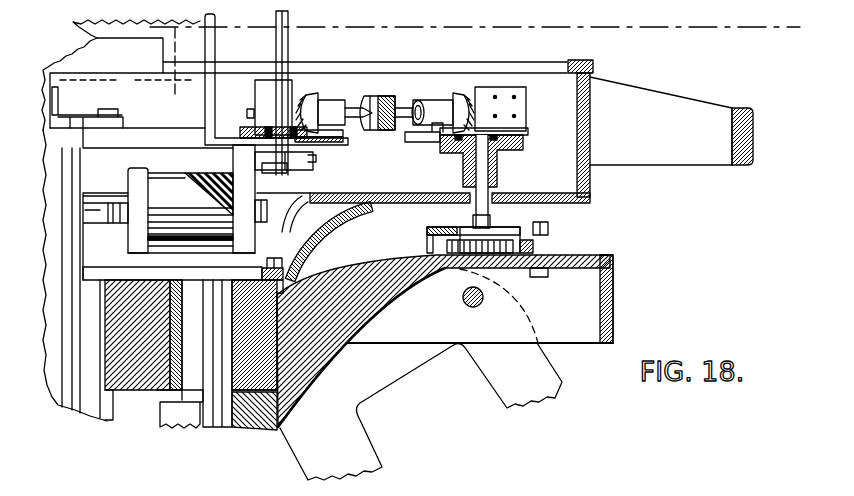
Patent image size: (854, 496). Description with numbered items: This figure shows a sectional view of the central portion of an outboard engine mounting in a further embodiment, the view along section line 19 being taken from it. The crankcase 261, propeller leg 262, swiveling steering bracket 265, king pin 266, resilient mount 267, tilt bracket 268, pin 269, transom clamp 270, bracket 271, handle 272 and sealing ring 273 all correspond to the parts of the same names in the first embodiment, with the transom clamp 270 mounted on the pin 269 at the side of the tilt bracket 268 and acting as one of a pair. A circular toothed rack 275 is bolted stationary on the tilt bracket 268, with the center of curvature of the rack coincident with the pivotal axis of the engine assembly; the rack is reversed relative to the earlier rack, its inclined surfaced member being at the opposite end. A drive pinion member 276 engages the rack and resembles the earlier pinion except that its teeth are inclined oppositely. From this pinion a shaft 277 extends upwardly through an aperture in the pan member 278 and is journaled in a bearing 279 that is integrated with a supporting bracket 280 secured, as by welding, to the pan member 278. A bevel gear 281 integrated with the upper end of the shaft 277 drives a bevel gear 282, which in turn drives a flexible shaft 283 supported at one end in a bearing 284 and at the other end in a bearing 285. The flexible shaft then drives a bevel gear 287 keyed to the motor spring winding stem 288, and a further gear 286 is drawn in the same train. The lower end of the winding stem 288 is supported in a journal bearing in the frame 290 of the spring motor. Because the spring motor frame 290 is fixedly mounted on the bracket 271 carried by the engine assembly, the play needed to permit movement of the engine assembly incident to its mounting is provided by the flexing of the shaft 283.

The section line 19— 19 is at (76, 72).
The crankcase 261 is at (130, 62).
The propeller leg 262 is at (72, 372).
The swiveling steering bracket 265 is at (138, 388).
The king pin 266 is at (223, 428).
The resilient mount 267 is at (186, 204).
The tilt bracket 268 is at (253, 427).
The pin 269 is at (463, 303).
The transom clamp 270 is at (375, 451).
The bracket 271 is at (86, 36).
The handle 272 is at (653, 133).
The sealing ring 273 is at (593, 66).
The circular toothed rack 275 is at (527, 226).
The drive pinion member 276 is at (447, 247).
The shaft 277 is at (474, 207).
The pan member 278 is at (590, 183).
The bearing 279 is at (498, 170).
The supporting bracket 280 is at (525, 108).
The bevel gear 281 is at (528, 133).
The bevel gear 282 is at (452, 97).
The flexible shaft 283 is at (357, 118).
The bearing 284 is at (427, 128).
The bearing 285 is at (347, 104).
The bevel gear 286 is at (305, 98).
The bevel gear 287 is at (240, 132).
The motor spring winding stem 288 is at (288, 54).
The frame 290 is at (205, 107).